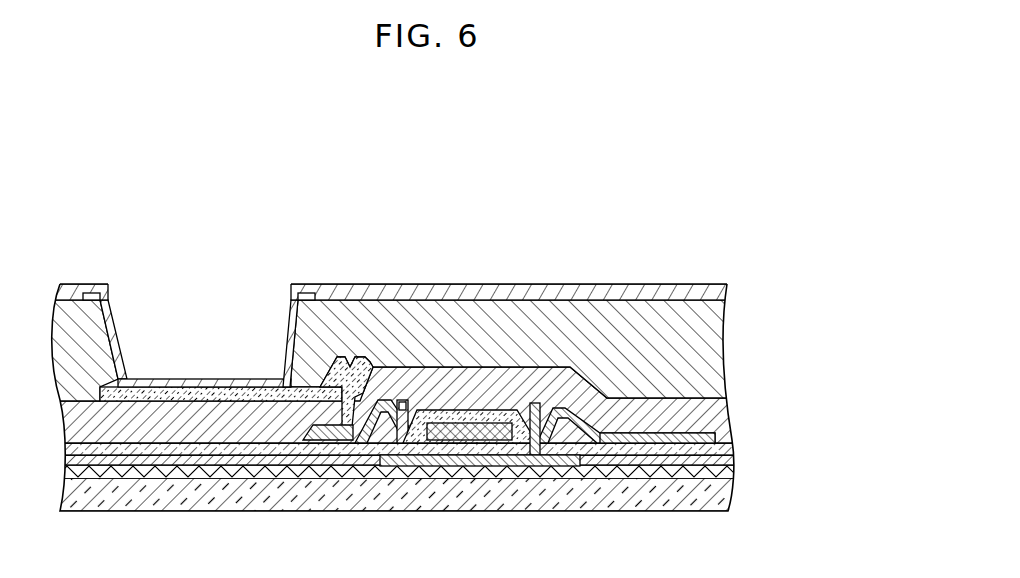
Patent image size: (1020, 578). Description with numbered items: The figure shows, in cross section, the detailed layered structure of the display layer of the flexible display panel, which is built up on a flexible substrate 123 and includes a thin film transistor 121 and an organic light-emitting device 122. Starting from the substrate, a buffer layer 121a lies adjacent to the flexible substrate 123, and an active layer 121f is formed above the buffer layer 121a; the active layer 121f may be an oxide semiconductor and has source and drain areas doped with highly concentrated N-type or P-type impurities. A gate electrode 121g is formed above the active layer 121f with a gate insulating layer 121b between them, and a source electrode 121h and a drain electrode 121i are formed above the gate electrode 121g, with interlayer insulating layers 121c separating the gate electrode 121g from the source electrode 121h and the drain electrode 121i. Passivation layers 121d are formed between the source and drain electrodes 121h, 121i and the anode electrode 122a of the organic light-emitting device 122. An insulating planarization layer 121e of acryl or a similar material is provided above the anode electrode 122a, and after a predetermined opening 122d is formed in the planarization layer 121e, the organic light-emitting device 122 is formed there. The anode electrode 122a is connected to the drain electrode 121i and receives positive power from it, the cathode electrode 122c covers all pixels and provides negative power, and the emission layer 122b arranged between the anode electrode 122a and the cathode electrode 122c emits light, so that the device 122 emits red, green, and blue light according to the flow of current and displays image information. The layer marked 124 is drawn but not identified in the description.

The thin film transistor 121 is at (591, 334).
The buffer layer 121a is at (720, 478).
The gate insulating layer 121b is at (732, 465).
The interlayer insulating layer 121c is at (732, 452).
The passivation layer 121d is at (724, 412).
The planarization layer 121e is at (710, 331).
The active layer 121f is at (395, 462).
The gate electrode 121g is at (460, 440).
The source electrode 121h is at (562, 408).
The drain electrode 121i is at (402, 400).
The organic light-emitting device 122 is at (258, 262).
The anode electrode 122a is at (345, 355).
The emission layer 122b is at (125, 372).
The cathode electrode 122c is at (494, 292).
The opening 122d is at (113, 285).
The flexible substrate 123 is at (590, 500).
The active layer 124 is at (670, 437).